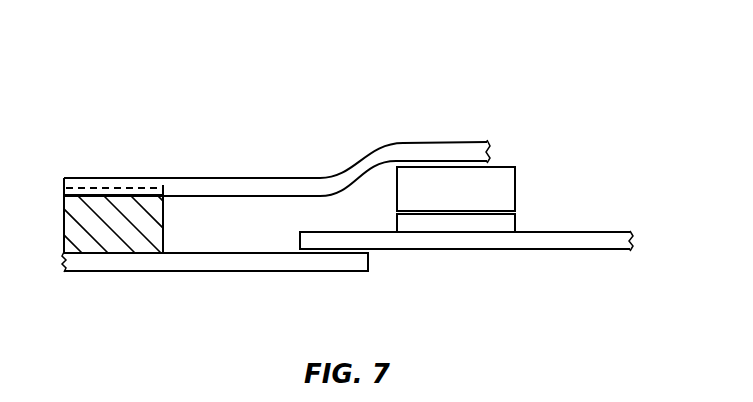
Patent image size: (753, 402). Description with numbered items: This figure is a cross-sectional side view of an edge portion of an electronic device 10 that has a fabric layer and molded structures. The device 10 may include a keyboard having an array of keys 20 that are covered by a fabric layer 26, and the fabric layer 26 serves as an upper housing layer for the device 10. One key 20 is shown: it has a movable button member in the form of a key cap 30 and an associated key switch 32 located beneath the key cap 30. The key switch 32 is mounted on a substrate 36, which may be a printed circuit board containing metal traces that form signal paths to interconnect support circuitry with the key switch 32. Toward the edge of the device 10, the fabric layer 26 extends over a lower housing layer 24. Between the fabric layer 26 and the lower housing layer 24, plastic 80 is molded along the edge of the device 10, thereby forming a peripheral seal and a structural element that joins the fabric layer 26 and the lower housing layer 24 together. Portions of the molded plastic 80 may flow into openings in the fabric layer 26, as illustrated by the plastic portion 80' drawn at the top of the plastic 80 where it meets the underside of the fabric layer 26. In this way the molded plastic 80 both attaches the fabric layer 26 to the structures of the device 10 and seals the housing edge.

The electronic device 10 is at (641, 54).
The key 20 is at (397, 127).
The lower housing layer 24 is at (228, 262).
The fabric layer 26 is at (236, 185).
The key cap 30 is at (505, 187).
The key switch 32 is at (513, 222).
The substrate 36 is at (603, 235).
The plastic 80 is at (107, 219).
The plastic portion 80' is at (113, 160).